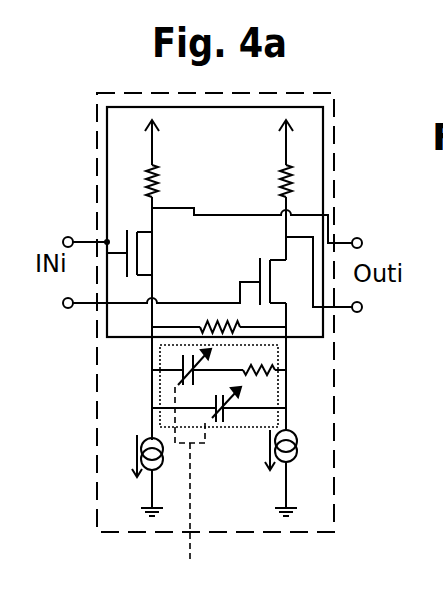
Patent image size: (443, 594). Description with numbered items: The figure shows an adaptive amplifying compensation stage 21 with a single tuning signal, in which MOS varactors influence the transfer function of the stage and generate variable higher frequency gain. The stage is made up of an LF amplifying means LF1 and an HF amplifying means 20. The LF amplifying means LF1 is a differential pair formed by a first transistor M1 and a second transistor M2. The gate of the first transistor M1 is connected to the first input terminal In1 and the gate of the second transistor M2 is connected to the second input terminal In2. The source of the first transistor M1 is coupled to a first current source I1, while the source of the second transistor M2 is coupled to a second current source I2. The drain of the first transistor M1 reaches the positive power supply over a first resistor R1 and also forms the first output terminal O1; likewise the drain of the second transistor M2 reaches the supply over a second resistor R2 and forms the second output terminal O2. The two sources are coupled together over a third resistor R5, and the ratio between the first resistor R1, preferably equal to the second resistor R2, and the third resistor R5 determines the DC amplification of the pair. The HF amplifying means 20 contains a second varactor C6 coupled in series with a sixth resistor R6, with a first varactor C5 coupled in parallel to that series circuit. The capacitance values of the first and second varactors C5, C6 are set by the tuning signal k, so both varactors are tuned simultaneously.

The HF amplifying means 20 is at (270, 384).
The adaptive amplifying compensation stage 21 is at (334, 457).
The LF amplifying means LF1 is at (322, 180).
The first resistor R1 is at (173, 176).
The second resistor R2 is at (263, 190).
The third resistor R5 is at (219, 314).
The sixth resistor R6 is at (264, 358).
The first varactor C5 is at (219, 406).
The second varactor C6 is at (197, 370).
The first transistor M1 is at (145, 253).
The second transistor M2 is at (285, 281).
The first current source I1 is at (136, 473).
The second current source I2 is at (271, 473).
The first input terminal In1 is at (67, 231).
The second input terminal In2 is at (142, 301).
The first output terminal O1 is at (382, 232).
The second output terminal O2 is at (382, 302).
The tuning signal k is at (190, 480).